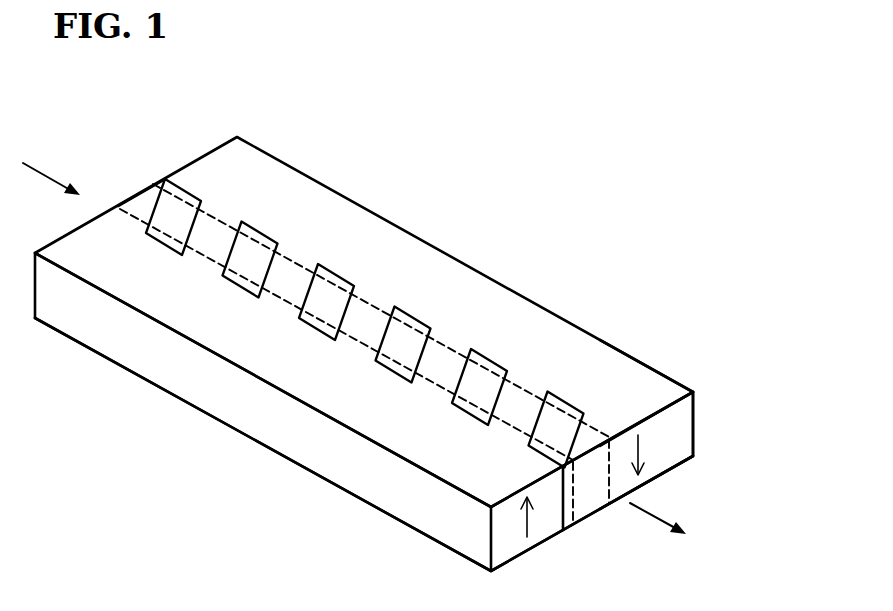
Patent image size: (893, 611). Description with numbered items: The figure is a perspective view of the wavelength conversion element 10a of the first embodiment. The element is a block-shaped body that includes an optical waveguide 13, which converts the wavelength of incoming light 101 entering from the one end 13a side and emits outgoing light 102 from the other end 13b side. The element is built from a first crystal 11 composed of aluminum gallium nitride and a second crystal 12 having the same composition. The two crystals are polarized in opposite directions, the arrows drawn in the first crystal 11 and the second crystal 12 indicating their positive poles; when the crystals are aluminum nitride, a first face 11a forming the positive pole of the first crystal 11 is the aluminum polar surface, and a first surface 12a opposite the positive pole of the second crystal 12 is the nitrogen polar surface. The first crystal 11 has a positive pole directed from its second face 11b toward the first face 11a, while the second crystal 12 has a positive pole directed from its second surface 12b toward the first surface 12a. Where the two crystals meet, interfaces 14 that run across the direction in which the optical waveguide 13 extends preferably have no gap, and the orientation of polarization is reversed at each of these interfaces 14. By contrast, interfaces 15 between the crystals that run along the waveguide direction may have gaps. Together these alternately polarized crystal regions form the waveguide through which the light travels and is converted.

The wavelength conversion element 10a is at (522, 185).
The first crystal 11 is at (364, 421).
The first face 11a is at (485, 472).
The second face 11b is at (444, 549).
The second crystal 12 is at (706, 424).
The first surface 12a is at (677, 468).
The second surface 12b is at (655, 388).
The optical waveguide 13 is at (213, 225).
The one end 13a is at (137, 191).
The other end 13b is at (593, 481).
The interfaces 14 is at (192, 212).
The interfaces 15 is at (262, 230).
The incoming light 101 is at (47, 183).
The outgoing light 102 is at (653, 524).